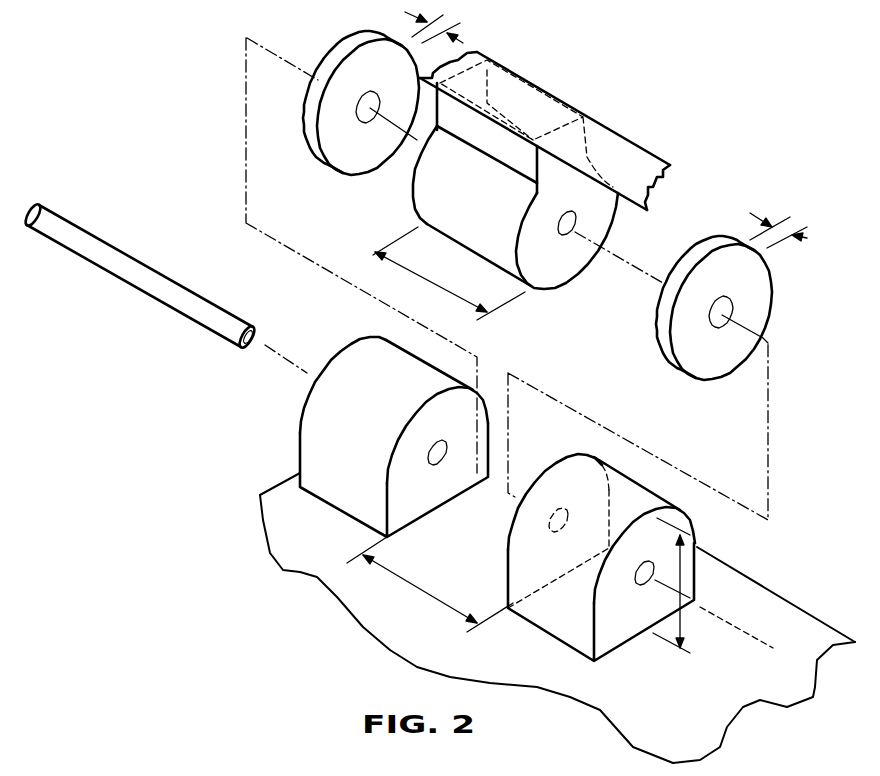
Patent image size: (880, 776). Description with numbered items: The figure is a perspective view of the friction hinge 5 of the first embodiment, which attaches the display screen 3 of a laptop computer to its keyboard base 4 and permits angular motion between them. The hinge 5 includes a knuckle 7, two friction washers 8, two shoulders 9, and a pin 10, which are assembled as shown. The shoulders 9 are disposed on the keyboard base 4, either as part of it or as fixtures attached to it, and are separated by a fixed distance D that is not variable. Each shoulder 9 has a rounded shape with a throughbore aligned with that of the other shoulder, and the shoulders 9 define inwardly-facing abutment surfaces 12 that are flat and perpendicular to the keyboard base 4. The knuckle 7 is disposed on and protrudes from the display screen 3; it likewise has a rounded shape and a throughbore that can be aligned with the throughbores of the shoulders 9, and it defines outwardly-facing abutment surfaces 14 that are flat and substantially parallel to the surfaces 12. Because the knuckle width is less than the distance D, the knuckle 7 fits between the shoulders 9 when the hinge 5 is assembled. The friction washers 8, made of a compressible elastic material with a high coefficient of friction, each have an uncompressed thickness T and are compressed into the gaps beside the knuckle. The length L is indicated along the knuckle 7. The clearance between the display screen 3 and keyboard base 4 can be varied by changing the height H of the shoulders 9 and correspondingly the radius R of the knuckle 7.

The display screen 3 is at (657, 153).
The keyboard base 4 is at (740, 602).
The hinge 5 is at (802, 172).
The knuckle 7 is at (488, 174).
The friction washers 8 is at (703, 258).
The shoulders 9 is at (508, 568).
The pin 10 is at (110, 258).
The inwardly-facing abutment surfaces 12 is at (510, 520).
The outwardly-facing abutment surfaces 14 is at (532, 235).
The radius of knuckle R is at (605, 212).
The thickness of friction washer T is at (609, 131).
The block length L is at (449, 273).
The distance between shoulders D is at (430, 583).
The height of shoulders H is at (671, 585).